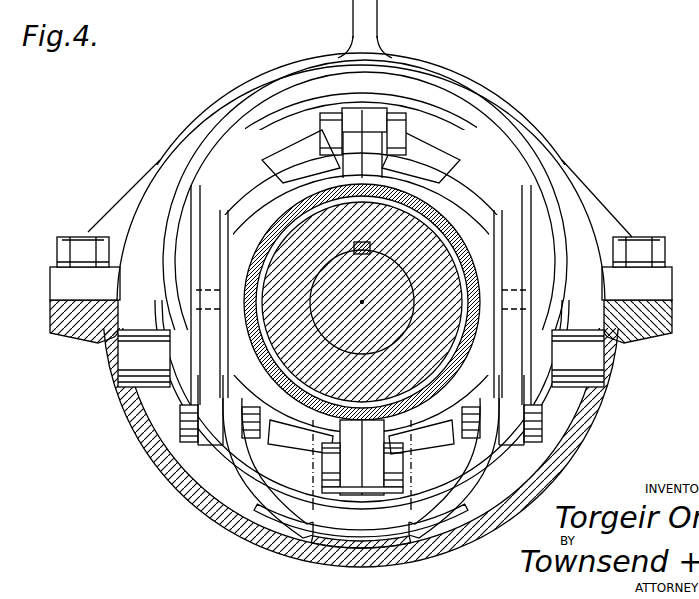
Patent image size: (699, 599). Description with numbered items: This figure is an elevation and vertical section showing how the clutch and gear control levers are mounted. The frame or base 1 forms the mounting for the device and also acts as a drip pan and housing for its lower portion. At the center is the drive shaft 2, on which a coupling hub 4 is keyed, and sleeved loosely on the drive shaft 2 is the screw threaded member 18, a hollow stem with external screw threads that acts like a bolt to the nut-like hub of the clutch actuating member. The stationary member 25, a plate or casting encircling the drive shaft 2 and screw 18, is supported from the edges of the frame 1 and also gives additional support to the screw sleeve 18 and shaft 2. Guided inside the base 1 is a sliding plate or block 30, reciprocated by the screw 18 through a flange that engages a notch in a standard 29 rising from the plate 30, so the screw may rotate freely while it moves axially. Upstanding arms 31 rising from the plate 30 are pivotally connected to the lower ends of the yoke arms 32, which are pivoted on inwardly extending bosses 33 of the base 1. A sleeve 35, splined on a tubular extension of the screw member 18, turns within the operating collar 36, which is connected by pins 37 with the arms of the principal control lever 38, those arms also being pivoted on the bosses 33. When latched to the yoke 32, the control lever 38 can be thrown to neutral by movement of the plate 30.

The frame or base 1 is at (583, 447).
The drive shaft 2 is at (393, 268).
The coupling hub 4 is at (302, 227).
The screw threaded member 18 is at (400, 203).
The stationary member 25 is at (556, 166).
The standard 29 is at (325, 440).
The plate or block 30 is at (368, 535).
The upstanding arms 31 is at (236, 470).
The yoke arms 32 is at (240, 95).
The bosses 33 is at (361, 358).
The sleeve 35 is at (320, 192).
The operating collar 36 is at (418, 418).
The pins 37 is at (190, 290).
The principal control lever 38 is at (365, 4).